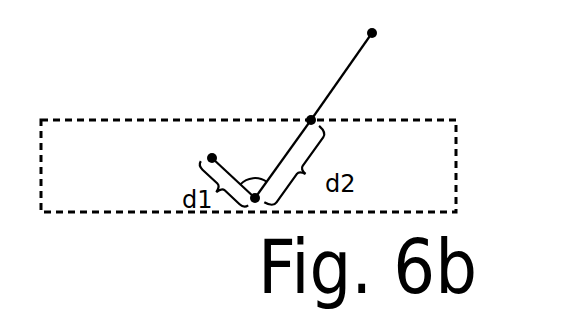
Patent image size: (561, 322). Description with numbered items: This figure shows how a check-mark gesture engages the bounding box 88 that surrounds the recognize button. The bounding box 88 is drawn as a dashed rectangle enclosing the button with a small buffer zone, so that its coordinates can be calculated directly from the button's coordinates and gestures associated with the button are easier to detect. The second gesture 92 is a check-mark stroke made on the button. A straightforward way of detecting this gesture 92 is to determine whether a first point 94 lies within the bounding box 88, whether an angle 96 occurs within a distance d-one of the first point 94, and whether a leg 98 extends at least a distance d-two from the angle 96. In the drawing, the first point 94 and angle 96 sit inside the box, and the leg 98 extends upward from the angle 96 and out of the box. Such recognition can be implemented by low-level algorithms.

The bounding box 88 is at (456, 160).
The second gesture 92 is at (348, 67).
The first point 94 is at (210, 156).
The angle 96 is at (257, 176).
The leg 98 is at (303, 118).